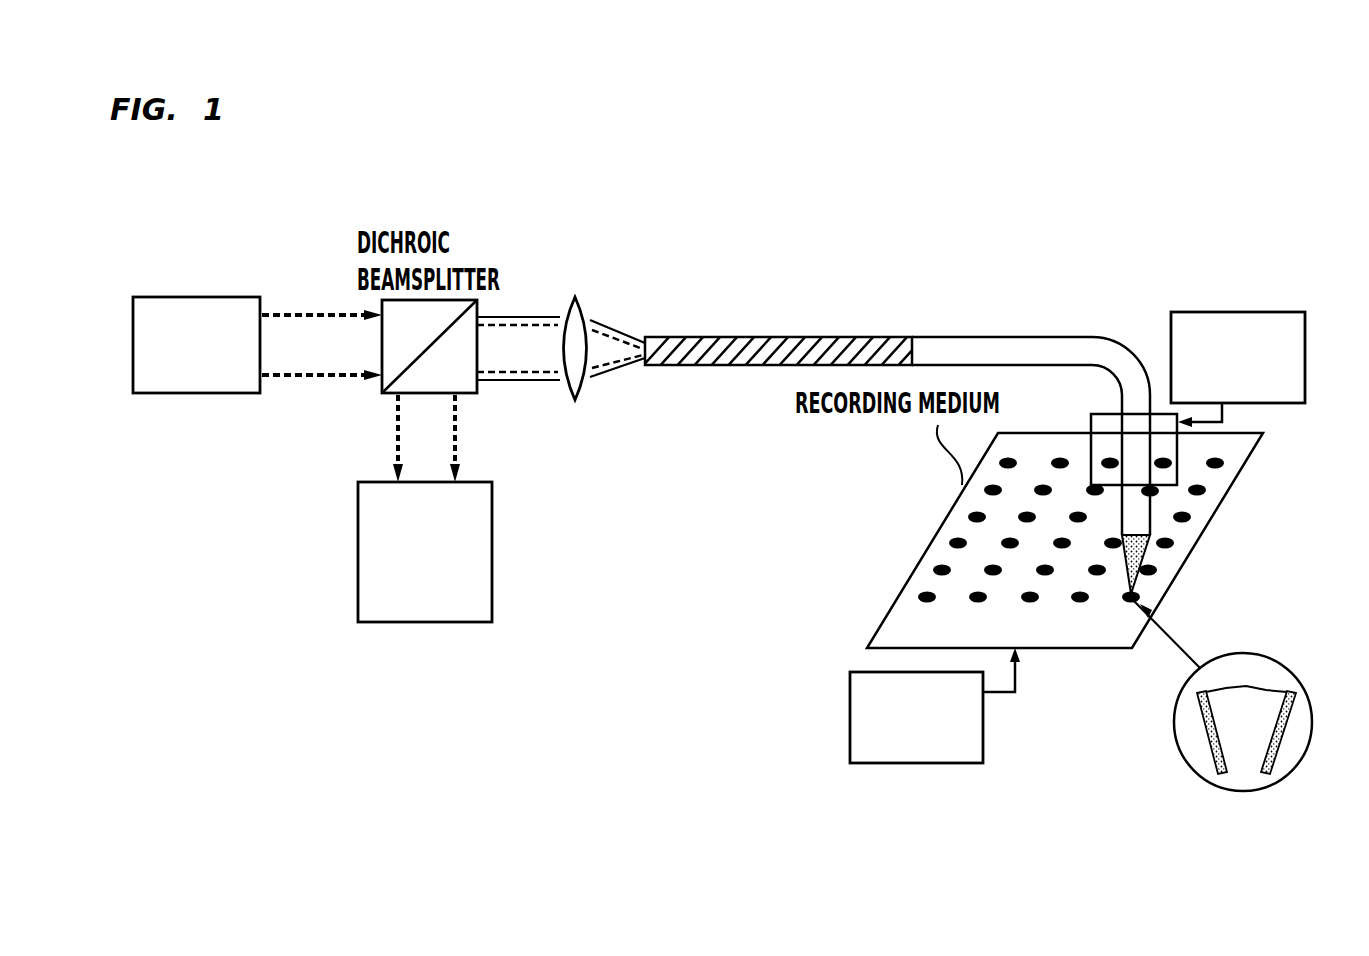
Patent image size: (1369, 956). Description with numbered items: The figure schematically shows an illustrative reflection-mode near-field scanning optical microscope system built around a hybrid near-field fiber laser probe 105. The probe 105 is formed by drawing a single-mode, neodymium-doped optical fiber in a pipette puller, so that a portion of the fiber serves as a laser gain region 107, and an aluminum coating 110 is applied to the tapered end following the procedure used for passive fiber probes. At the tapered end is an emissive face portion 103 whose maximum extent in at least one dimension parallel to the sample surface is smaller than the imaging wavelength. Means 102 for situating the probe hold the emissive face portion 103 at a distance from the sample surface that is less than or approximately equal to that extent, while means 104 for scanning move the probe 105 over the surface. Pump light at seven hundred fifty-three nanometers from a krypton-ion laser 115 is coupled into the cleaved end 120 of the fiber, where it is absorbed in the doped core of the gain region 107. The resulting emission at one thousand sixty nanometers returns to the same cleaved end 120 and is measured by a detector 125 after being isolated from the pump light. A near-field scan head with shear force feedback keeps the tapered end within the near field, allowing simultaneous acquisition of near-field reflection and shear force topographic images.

The laser 115 is at (133, 345).
The detector 125 is at (358, 540).
The cleaved end 120 is at (657, 337).
The laser gain region 107 is at (866, 337).
The fiber laser probe 105 is at (975, 321).
The means for scanning the probe 104 is at (1290, 312).
The aluminum coating 110 is at (1145, 558).
The means for situating emissive face portion 102 is at (850, 748).
The emissive face portion 103 is at (1235, 776).